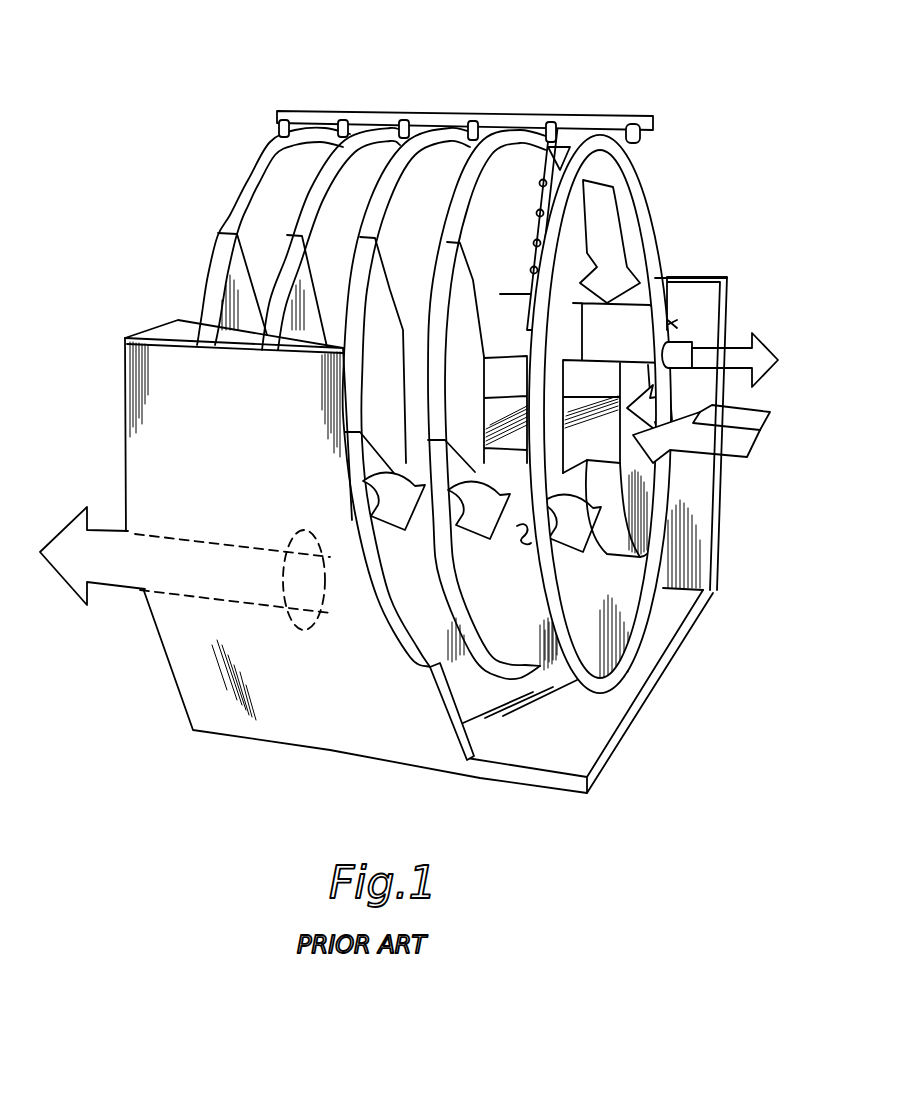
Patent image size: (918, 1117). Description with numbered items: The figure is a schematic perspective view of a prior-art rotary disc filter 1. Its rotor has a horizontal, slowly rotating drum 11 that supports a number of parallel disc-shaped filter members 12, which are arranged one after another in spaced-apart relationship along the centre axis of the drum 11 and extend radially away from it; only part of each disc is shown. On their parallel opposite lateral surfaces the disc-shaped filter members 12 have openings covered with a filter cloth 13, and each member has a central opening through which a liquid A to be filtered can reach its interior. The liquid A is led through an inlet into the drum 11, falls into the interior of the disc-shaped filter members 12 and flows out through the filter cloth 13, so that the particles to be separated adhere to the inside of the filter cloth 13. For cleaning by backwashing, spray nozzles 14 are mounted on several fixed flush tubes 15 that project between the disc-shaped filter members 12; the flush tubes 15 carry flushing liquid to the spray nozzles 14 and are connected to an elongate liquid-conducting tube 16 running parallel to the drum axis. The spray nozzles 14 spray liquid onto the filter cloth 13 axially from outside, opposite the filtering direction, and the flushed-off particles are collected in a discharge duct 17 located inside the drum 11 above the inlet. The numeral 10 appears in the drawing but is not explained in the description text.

The rotary disc filter 1 is at (683, 168).
The support bar 10 is at (466, 112).
The drum 11 is at (660, 486).
The disc-shaped filter member 12 is at (248, 184).
The filter cloth 13 is at (297, 165).
The spray nozzle 14 is at (555, 155).
The flush tube 15 is at (560, 152).
The liquid-conducting tube 16 is at (385, 120).
The discharge duct 17 is at (668, 355).
The liquid A is at (735, 452).